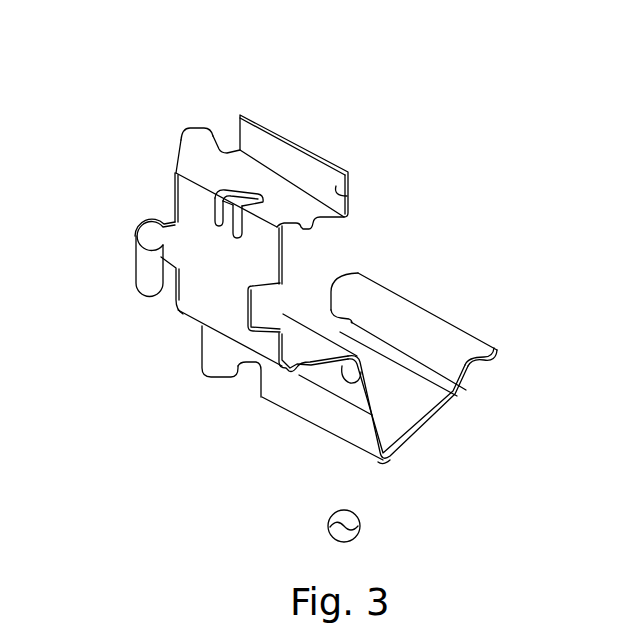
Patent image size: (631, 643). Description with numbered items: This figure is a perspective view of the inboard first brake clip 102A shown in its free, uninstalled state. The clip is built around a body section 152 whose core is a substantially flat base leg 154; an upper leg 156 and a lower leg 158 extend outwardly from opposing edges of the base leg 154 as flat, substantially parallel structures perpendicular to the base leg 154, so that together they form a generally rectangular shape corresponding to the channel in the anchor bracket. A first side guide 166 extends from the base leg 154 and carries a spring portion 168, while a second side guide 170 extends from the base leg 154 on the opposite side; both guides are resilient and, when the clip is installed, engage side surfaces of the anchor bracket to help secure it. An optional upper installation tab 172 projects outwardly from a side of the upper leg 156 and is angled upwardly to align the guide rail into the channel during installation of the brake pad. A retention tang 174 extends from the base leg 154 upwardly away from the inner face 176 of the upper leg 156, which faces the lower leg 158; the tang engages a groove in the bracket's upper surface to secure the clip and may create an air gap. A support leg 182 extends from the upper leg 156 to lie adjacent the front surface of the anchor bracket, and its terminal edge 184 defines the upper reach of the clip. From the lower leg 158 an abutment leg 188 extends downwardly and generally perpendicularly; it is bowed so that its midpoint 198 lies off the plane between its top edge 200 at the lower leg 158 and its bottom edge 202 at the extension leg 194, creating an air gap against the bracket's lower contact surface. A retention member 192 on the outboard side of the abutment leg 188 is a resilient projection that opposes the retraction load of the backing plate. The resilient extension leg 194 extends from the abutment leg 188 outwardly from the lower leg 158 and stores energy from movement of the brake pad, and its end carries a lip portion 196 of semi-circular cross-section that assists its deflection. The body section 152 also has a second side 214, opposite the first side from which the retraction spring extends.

The inboard first brake clip 102A is at (298, 79).
The body section 152 is at (377, 485).
The base leg 154 is at (206, 292).
The upper leg 156 is at (230, 168).
The lower leg 158 is at (323, 383).
The first side guide 166 is at (142, 213).
The spring portion 168 is at (147, 277).
The second side guide 170 is at (272, 307).
The upper installation tab 172 is at (205, 128).
The retention tang 174 is at (188, 168).
The inner face 176 is at (343, 228).
The support leg 182 is at (345, 193).
The terminal edge 184 is at (330, 145).
The abutment leg 188 is at (268, 400).
The retention member 192 is at (212, 367).
The extension leg 194 is at (349, 398).
The lip portion 196 is at (422, 324).
The midpoint 198 is at (468, 343).
The top edge 200 is at (367, 281).
The bottom edge 202 is at (383, 463).
The second side 214 is at (327, 368).